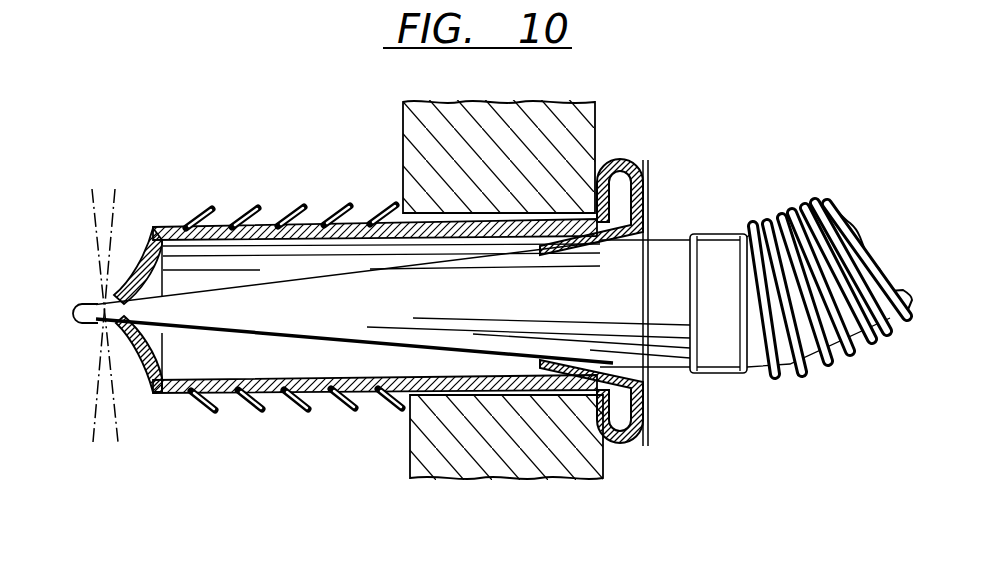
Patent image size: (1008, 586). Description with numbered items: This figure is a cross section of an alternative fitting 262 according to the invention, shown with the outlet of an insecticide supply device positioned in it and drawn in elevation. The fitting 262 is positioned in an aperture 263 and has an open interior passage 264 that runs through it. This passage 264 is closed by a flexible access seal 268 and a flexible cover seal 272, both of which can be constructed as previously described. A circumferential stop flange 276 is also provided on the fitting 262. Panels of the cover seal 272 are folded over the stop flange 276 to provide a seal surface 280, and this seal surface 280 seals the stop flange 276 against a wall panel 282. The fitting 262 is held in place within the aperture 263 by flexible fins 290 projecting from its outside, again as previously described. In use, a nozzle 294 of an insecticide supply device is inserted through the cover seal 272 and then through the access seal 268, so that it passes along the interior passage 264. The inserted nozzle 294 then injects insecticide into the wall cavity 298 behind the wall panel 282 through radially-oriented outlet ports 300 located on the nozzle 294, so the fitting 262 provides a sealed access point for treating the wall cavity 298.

The fitting 262 is at (179, 204).
The aperture 263 is at (447, 210).
The open interior passage 264 is at (250, 366).
The flexible access seal 268 is at (119, 272).
The flexible cover seal 272 is at (648, 393).
The circumferential stop flange 276 is at (622, 442).
The seal surface 280 is at (600, 410).
The wall panel 282 is at (597, 127).
The flexible fins 290 is at (240, 213).
The nozzle 294 is at (345, 293).
The wall cavity 298 is at (95, 365).
The radially-oriented outlet ports 300 is at (107, 302).